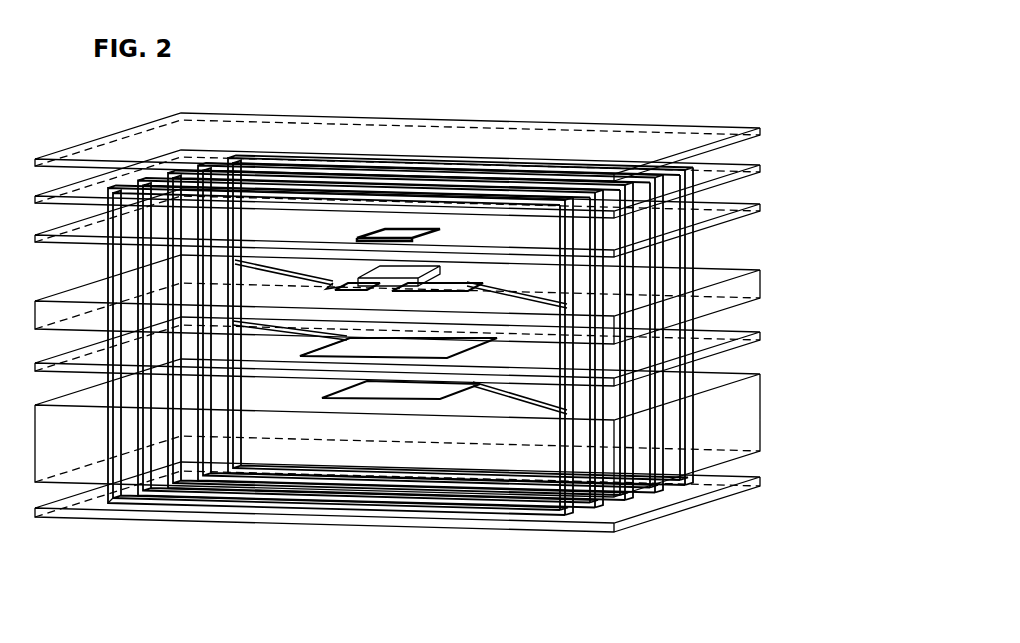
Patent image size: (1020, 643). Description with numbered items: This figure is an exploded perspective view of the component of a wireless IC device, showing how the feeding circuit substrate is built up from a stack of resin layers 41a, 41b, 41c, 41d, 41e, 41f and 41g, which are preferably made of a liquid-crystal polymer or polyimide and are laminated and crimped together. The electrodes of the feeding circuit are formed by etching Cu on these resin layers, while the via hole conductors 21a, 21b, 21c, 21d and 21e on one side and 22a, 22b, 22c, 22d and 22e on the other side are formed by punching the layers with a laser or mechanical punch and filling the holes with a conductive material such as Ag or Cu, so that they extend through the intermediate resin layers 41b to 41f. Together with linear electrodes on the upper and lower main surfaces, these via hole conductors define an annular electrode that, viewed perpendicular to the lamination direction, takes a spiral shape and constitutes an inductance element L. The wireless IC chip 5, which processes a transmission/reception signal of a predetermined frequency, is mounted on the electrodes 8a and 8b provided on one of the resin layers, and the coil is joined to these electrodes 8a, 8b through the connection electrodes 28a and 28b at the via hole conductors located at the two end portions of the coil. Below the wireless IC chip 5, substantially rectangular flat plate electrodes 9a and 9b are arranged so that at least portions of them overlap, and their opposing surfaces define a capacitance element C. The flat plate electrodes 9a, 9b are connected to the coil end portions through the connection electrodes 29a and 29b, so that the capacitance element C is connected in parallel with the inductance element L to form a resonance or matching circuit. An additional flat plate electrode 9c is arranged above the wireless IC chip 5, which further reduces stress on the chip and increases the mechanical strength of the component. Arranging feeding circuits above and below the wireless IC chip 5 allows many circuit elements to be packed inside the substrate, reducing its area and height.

The resin layer 41a is at (762, 131).
The resin layer 41b is at (762, 168).
The resin layer 41c is at (762, 207).
The resin layer 41d is at (762, 284).
The resin layer 41e is at (762, 335).
The resin layer 41f is at (762, 412).
The resin layer 41g is at (762, 481).
The via hole conductor 21a is at (140, 507).
The via hole conductor 21b is at (178, 505).
The via hole conductor 21c is at (200, 503).
The via hole conductor 21d is at (253, 507).
The via hole conductor 21e is at (287, 507).
The via hole conductor 22a is at (598, 518).
The via hole conductor 22b is at (635, 520).
The via hole conductor 22c is at (655, 512).
The via hole conductor 22d is at (680, 508).
The via hole conductor 22e is at (700, 500).
The connection electrode 28a is at (278, 270).
The connection electrode 28b is at (518, 293).
The wireless IC chip 5 is at (420, 267).
The electrode 8a is at (332, 292).
The electrode 8b is at (422, 292).
The flat plate electrode 9a is at (467, 348).
The flat plate electrode 9b is at (357, 399).
The flat plate electrode 9c is at (418, 232).
The connection electrode 29a is at (278, 334).
The connection electrode 29b is at (500, 394).
The capacitance element C is at (356, 360).
The inductance element L is at (285, 476).